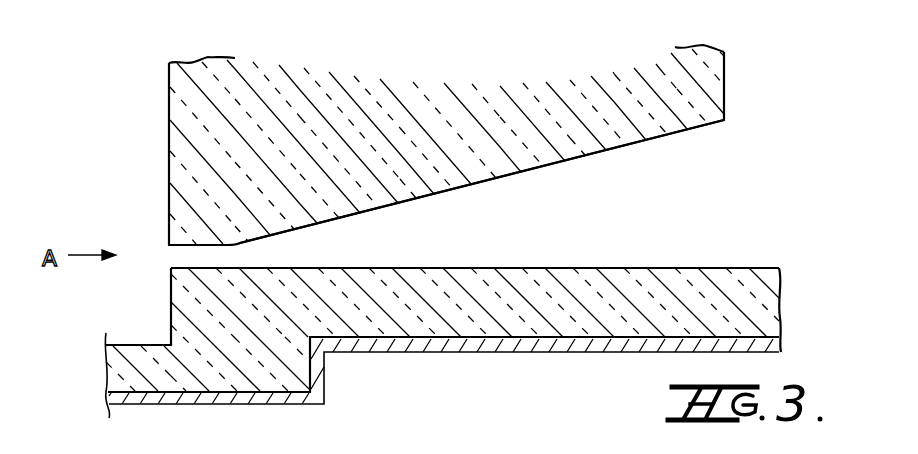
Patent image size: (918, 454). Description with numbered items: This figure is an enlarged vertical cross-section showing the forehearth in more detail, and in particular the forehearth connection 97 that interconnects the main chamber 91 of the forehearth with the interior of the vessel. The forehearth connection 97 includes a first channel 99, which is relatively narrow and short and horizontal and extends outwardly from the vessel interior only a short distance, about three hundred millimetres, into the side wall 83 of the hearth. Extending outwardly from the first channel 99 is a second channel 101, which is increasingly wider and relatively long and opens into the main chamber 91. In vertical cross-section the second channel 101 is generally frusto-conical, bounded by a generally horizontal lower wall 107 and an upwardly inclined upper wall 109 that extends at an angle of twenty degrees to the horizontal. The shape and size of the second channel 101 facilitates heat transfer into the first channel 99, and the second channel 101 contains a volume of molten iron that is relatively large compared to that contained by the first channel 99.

The side wall 83 is at (275, 137).
The main chamber 91 is at (825, 118).
The forehearth connection 97 is at (522, 206).
The first channel 99 is at (195, 258).
The second channel 101 is at (475, 248).
The lower wall 107 is at (625, 267).
The upper wall 109 is at (628, 145).